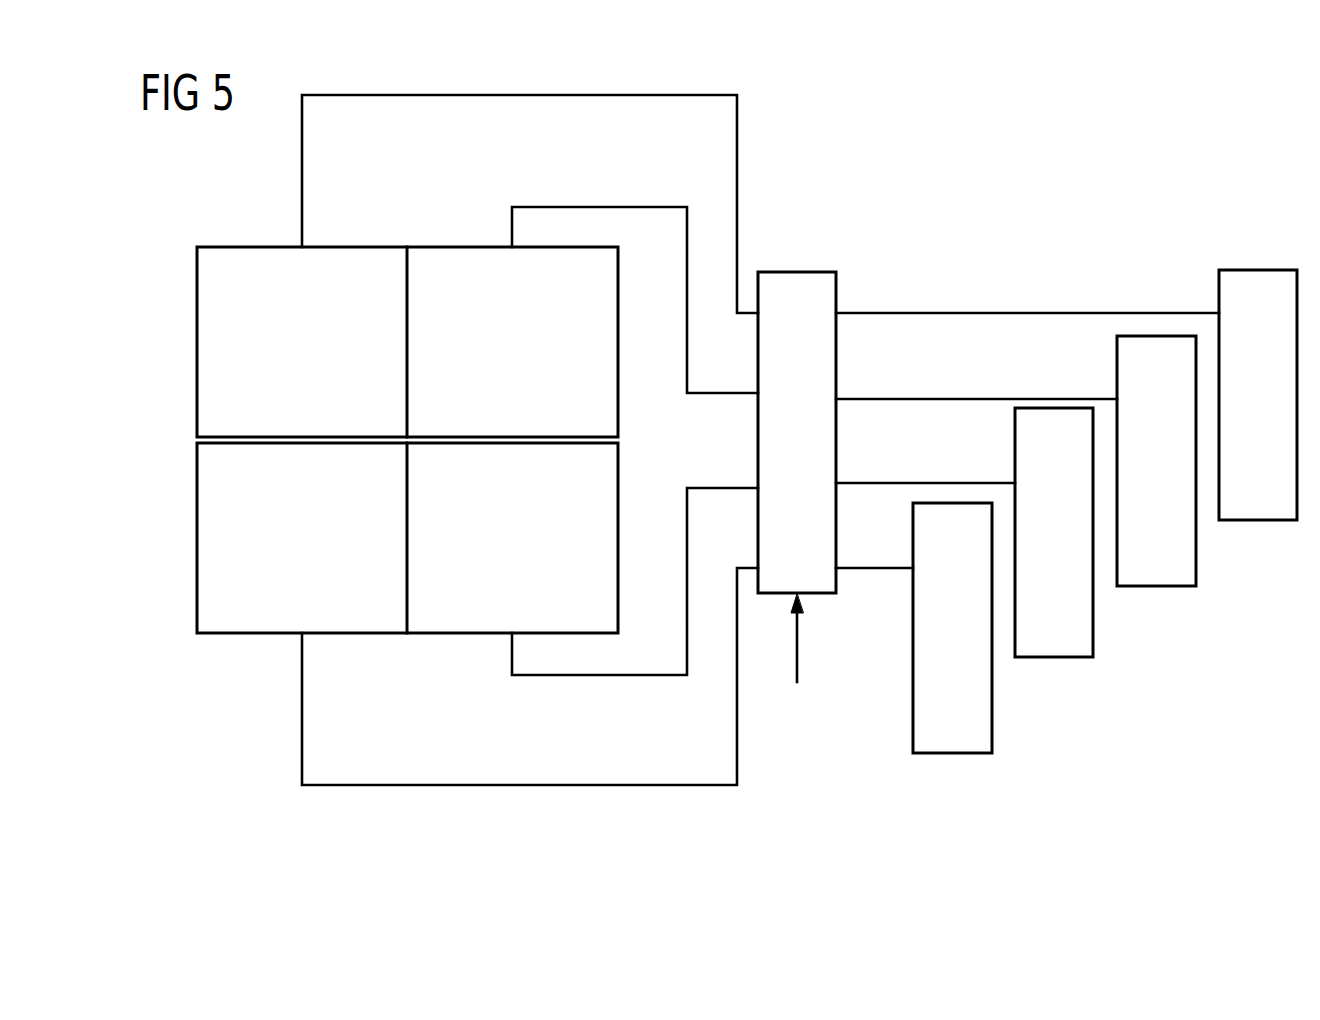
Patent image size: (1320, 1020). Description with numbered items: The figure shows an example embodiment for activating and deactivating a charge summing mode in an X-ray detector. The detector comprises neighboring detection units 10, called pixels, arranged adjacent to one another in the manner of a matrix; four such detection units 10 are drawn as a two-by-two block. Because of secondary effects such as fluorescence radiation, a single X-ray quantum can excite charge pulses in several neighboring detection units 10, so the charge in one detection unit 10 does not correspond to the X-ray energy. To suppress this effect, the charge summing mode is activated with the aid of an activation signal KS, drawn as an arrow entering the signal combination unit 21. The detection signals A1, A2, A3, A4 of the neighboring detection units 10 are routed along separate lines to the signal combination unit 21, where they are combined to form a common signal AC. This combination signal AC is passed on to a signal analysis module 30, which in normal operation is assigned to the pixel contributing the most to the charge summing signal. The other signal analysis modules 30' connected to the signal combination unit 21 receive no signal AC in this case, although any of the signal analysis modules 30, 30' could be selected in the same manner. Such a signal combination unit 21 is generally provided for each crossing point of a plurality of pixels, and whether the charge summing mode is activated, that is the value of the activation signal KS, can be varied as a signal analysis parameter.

The detection unit 10 is at (205, 350).
The signal combination unit 21 is at (797, 271).
The signal analysis module 30 is at (952, 666).
The signal analysis module 30' is at (1156, 502).
The detection signal A1 is at (437, 784).
The detection signal A2 is at (597, 676).
The detection signal A3 is at (630, 206).
The detection signal A4 is at (480, 96).
The combination signal AC is at (957, 312).
The activation signal KS is at (798, 658).